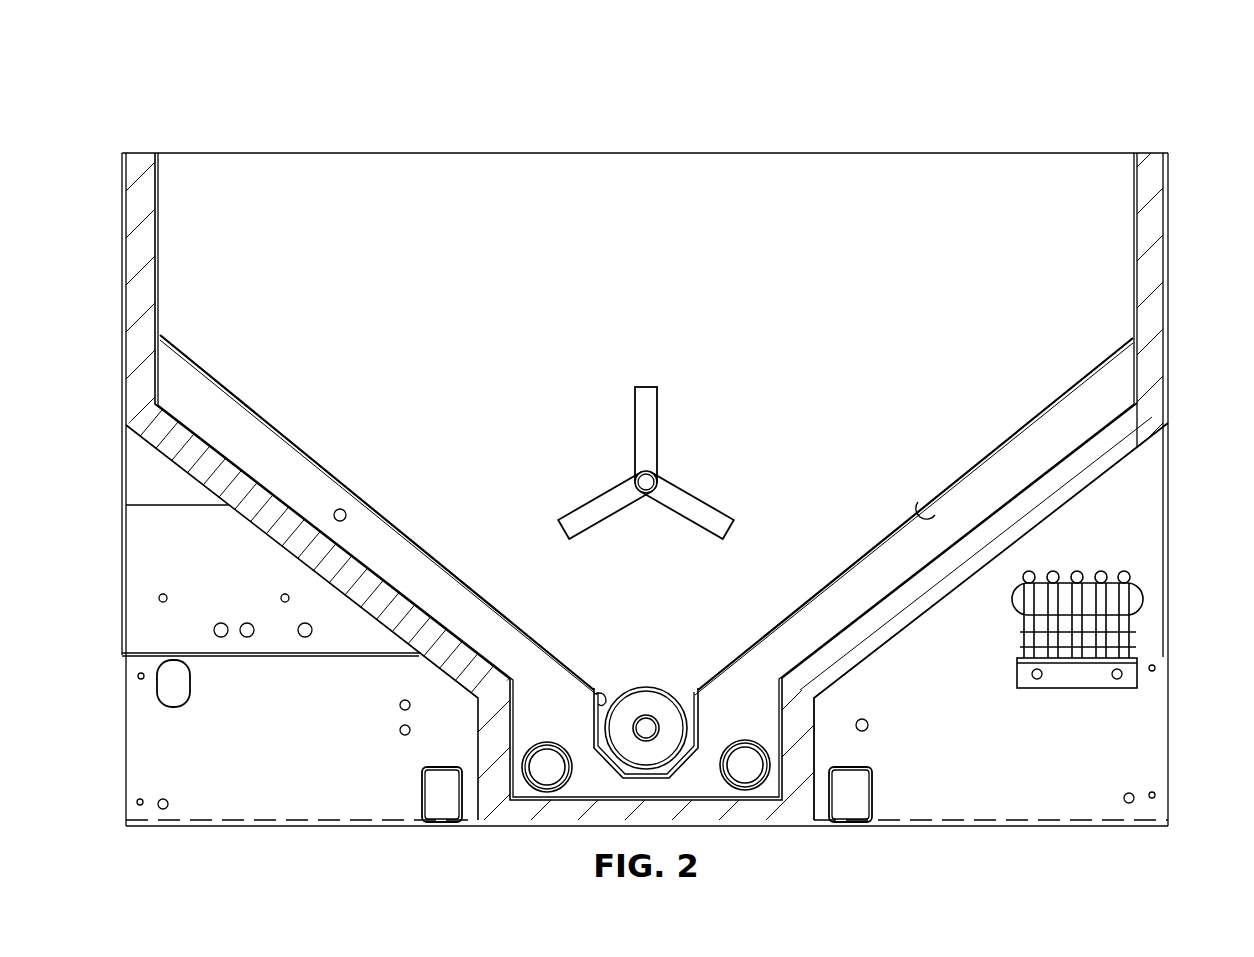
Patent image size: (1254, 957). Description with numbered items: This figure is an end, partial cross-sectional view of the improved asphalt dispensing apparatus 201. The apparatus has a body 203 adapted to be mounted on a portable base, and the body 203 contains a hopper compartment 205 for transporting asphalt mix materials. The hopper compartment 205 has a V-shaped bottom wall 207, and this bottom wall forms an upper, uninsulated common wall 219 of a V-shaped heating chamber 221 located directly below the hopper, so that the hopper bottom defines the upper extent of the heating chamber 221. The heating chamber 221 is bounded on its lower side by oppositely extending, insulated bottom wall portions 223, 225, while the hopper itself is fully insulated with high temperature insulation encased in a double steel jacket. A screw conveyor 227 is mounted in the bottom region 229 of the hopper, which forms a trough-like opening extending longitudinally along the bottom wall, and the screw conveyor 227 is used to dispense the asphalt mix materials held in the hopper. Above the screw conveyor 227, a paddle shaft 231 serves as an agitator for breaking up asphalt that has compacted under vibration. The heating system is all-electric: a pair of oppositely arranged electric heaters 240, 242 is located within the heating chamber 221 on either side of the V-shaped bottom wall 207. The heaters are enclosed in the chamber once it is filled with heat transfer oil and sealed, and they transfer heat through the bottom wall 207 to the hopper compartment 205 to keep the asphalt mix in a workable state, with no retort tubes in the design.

The asphalt dispensing apparatus 201 is at (236, 110).
The body 203 is at (1168, 302).
The hopper compartment 205 is at (922, 170).
The V-shaped bottom wall 207 is at (1020, 432).
The upper uninsulated common wall 219 is at (925, 508).
The V-shaped heating chamber 221 is at (1094, 403).
The insulated bottom wall portion 223 is at (1092, 484).
The insulated bottom wall portion 225 is at (262, 530).
The screw conveyor 227 is at (668, 690).
The bottom region 229 is at (600, 697).
The paddle shaft 231 is at (670, 476).
The electric heater 240 is at (552, 758).
The electric heater 242 is at (740, 758).